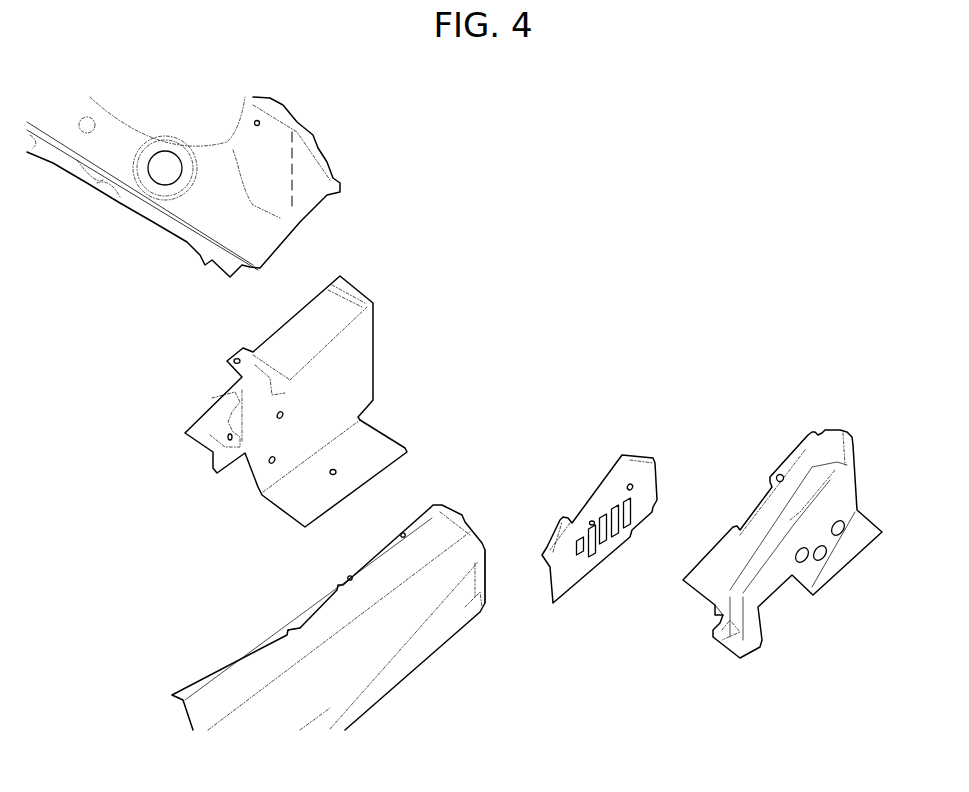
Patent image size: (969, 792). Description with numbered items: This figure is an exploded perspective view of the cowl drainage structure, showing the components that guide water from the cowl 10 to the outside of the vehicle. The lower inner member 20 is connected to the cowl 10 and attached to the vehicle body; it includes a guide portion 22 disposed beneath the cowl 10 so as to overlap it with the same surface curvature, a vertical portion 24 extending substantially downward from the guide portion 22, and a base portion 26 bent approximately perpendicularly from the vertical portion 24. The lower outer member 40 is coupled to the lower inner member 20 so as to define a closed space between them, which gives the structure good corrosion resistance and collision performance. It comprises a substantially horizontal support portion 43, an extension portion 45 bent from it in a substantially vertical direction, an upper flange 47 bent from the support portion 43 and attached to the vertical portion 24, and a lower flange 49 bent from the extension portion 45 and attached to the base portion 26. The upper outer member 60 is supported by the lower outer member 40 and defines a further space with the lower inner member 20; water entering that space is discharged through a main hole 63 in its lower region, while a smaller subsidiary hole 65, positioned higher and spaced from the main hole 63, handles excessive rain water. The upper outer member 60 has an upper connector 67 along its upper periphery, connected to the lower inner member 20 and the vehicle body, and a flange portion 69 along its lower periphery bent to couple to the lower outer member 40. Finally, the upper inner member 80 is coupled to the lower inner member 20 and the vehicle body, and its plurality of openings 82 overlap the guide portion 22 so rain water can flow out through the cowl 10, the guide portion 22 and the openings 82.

The cowl 10 is at (333, 144).
The lower inner member 20 is at (388, 296).
The guide portion 22 is at (292, 335).
The vertical portion 24 is at (353, 367).
The base portion 26 is at (302, 508).
The lower outer member 40 is at (460, 490).
The support portion 43 is at (237, 693).
The extension portion 45 is at (326, 698).
The upper flange 47 is at (303, 628).
The lower flange 49 is at (407, 663).
The upper outer member 60 is at (824, 402).
The main hole 63 is at (776, 597).
The subsidiary hole 65 is at (840, 527).
The upper connector 67 is at (800, 458).
The flange portion 69 is at (838, 563).
The upper inner member 80 is at (599, 488).
The openings 82 is at (605, 537).